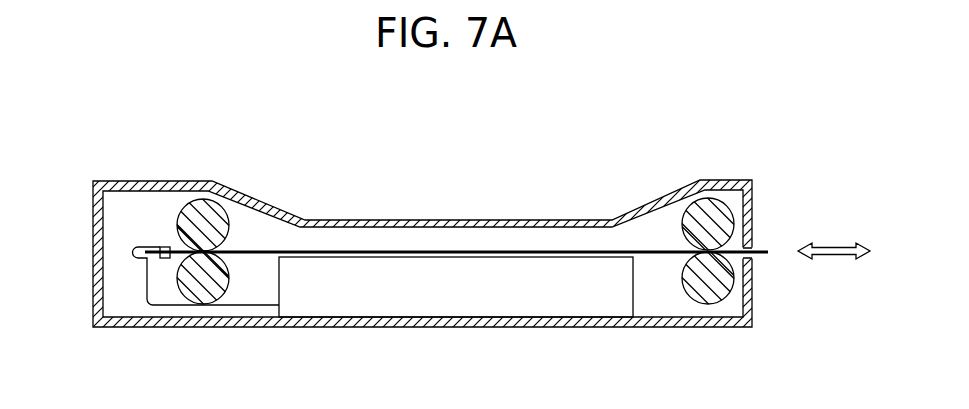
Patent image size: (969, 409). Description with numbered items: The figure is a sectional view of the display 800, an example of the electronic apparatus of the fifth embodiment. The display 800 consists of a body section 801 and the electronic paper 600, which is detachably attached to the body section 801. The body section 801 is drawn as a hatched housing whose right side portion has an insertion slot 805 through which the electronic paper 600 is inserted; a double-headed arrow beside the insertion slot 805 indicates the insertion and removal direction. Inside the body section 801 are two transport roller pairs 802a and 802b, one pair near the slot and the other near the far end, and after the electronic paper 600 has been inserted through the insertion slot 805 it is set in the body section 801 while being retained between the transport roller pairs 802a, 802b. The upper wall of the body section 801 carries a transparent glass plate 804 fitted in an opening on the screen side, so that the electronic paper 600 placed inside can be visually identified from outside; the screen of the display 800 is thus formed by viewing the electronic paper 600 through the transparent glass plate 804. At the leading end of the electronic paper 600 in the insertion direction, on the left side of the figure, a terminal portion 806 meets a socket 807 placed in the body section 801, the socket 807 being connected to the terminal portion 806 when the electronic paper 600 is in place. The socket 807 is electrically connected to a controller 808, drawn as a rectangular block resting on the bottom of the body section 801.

The display 800 is at (475, 224).
The body section 801 is at (181, 181).
The transport roller pair 802a is at (237, 232).
The transport roller pair 802b is at (673, 222).
The electronic paper 600 is at (436, 247).
The transparent glass plate 804 is at (515, 220).
The insertion slot 805 is at (762, 247).
The terminal portion 806 is at (161, 247).
The socket 807 is at (134, 260).
The controller 808 is at (410, 312).